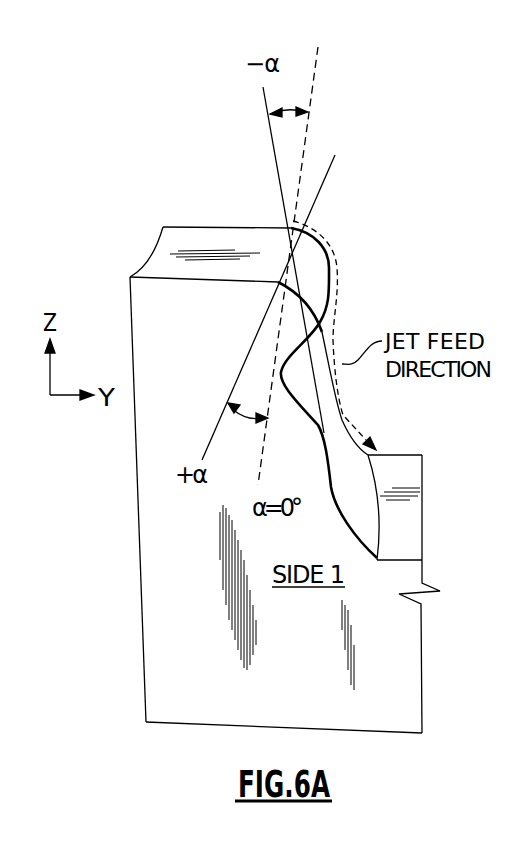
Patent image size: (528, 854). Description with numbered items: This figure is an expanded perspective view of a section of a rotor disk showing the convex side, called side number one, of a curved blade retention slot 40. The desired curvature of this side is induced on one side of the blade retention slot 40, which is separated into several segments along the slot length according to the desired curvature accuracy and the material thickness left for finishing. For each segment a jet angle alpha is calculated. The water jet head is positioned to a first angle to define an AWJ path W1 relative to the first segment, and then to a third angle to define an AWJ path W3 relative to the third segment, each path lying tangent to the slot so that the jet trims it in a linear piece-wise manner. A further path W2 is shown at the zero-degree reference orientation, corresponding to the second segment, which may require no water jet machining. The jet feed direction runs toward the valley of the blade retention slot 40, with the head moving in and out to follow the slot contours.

The curved blade retention slot 40 is at (285, 448).
The AWJ path W1 is at (273, 145).
The zero-angle reference line W2 is at (309, 127).
The AWJ path W3 is at (246, 355).